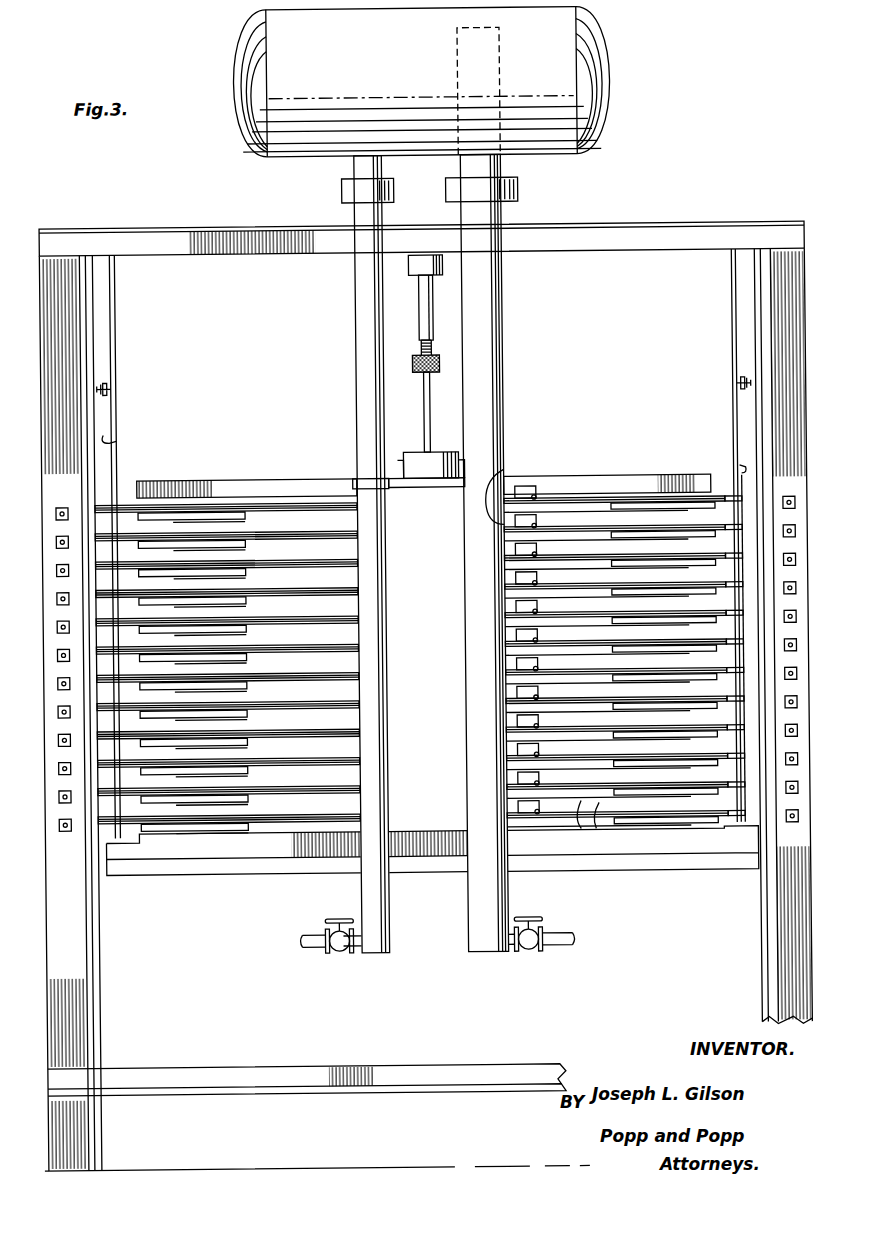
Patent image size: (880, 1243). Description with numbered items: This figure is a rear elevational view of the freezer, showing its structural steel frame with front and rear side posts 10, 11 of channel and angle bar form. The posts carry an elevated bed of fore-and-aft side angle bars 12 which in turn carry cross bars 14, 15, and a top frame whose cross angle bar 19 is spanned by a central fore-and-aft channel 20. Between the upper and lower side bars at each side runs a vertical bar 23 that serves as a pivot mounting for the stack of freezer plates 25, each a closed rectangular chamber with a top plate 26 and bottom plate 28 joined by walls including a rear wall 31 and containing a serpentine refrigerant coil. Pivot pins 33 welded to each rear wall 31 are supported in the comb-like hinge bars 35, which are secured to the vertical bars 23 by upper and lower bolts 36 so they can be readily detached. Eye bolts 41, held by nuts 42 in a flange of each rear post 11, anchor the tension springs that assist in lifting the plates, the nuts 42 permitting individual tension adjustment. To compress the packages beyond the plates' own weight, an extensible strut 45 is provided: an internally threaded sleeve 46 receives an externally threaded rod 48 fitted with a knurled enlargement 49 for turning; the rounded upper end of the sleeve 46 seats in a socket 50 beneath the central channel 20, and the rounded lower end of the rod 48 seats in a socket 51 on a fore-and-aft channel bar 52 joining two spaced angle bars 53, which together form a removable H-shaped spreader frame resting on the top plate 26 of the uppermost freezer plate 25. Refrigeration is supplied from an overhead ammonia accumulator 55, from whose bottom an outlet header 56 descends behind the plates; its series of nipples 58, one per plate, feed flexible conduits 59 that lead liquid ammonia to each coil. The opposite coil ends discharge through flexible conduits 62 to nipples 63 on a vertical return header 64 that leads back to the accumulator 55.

The front side post 10 is at (100, 1118).
The rear side post 11 is at (82, 1021).
The side angle bar 12 is at (103, 866).
The cross bar 14 is at (238, 873).
The cross bar 15 is at (286, 847).
The cross angle bar 19 is at (649, 226).
The central channel 20 is at (425, 254).
The vertical bar 23 is at (110, 310).
The freezer plate 25 is at (643, 516).
The top plate 26 is at (592, 826).
The bottom plate 28 is at (562, 800).
The rear wall 31 is at (650, 800).
The pivot pin 33 is at (746, 530).
The hinge bar 35 is at (112, 437).
The bolt 36 is at (120, 389).
The eye bolt 41 is at (58, 520).
The nut 42 is at (58, 814).
The extensible strut 45 is at (422, 346).
The internally threaded sleeve 46 is at (422, 300).
The externally threaded rod 48 is at (426, 418).
The knurled enlargement 49 is at (415, 366).
The socket 50 is at (412, 265).
The socket 51 is at (414, 458).
The fore-and-aft channel bar 52 is at (404, 468).
The angle bar 53 is at (587, 482).
The ammonia accumulator 55 is at (422, 81).
The outlet header 56 is at (358, 353).
The nipple 58 is at (342, 488).
The flexible ammonia conduit 59 is at (270, 528).
The flexible conduit 62 is at (510, 490).
The nipple 63 is at (540, 524).
The vertical return header 64 is at (498, 378).